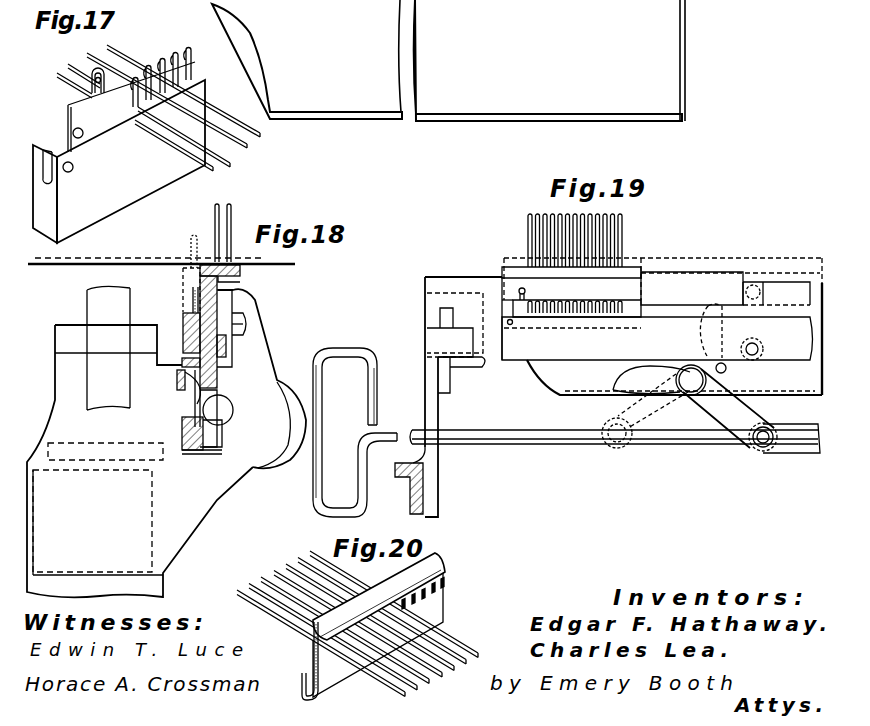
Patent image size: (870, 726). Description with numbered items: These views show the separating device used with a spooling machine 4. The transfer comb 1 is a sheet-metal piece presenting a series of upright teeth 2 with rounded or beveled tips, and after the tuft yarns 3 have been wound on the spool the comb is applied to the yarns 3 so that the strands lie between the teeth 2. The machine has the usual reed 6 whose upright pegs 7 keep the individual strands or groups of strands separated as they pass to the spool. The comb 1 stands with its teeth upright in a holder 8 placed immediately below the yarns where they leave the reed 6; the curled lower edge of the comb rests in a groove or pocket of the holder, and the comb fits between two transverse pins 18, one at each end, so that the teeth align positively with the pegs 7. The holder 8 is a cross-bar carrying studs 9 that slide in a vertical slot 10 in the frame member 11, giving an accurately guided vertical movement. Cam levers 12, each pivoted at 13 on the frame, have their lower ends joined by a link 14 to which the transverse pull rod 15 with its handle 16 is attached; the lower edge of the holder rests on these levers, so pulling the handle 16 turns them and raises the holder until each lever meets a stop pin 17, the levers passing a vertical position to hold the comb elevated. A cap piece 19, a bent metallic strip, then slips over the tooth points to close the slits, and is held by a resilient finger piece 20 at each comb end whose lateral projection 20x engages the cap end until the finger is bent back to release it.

In FIG. 17, the transfer comb 1 is at (70, 108).
In FIG. 18, the transfer comb 1 is at (192, 307).
In FIG. 19, the transfer comb 1 is at (526, 319).
In FIG. 20, the transfer comb 1 is at (438, 602).
In FIG. 17, the teeth 2 is at (192, 63).
In FIG. 19, the teeth 2 is at (622, 302).
In FIG. 20, the teeth 2 is at (316, 648).
In FIG. 17, the yarns 3 is at (233, 164).
In FIG. 18, the yarns 3 is at (262, 264).
In FIG. 20, the yarns 3 is at (448, 628).
In FIG. 18, the spooling machine 4 is at (166, 441).
In FIG. 19, the spooling machine 4 is at (420, 499).
In FIG. 18, the reed 6 is at (231, 264).
In FIG. 19, the reed 6 is at (522, 267).
In FIG. 18, the pegs 7 is at (214, 222).
In FIG. 19, the pegs 7 is at (623, 243).
In FIG. 17, the holder 8 is at (157, 182).
In FIG. 18, the holder 8 is at (183, 331).
In FIG. 19, the holder 8 is at (599, 352).
In FIG. 18, the studs 9 is at (222, 347).
In FIG. 19, the studs 9 is at (755, 353).
In FIG. 19, the vertical slot 10 is at (753, 313).
In FIG. 18, the frame member 11 is at (219, 284).
In FIG. 19, the frame member 11 is at (686, 294).
In FIG. 19, the cam levers 12 is at (630, 389).
In FIG. 18, the pivot 13 is at (194, 400).
In FIG. 19, the pivot 13 is at (689, 369).
In FIG. 18, the link 14 is at (203, 444).
In FIG. 19, the link 14 is at (803, 444).
In FIG. 18, the pull rod 15 is at (218, 416).
In FIG. 19, the pull rod 15 is at (496, 438).
In FIG. 18, the handle 16 is at (352, 356).
In FIG. 18, the stop pin 17 is at (182, 363).
In FIG. 19, the stop pin 17 is at (727, 371).
In FIG. 17, the transverse pins 18 is at (53, 142).
In FIG. 19, the transverse pins 18 is at (509, 318).
In FIG. 20, the cap piece 19 is at (436, 565).
In FIG. 17, the resilient finger piece 20 is at (90, 70).
In FIG. 17, the lateral projection 20x is at (98, 84).
In FIG. 19, the lateral projection 20x is at (527, 292).